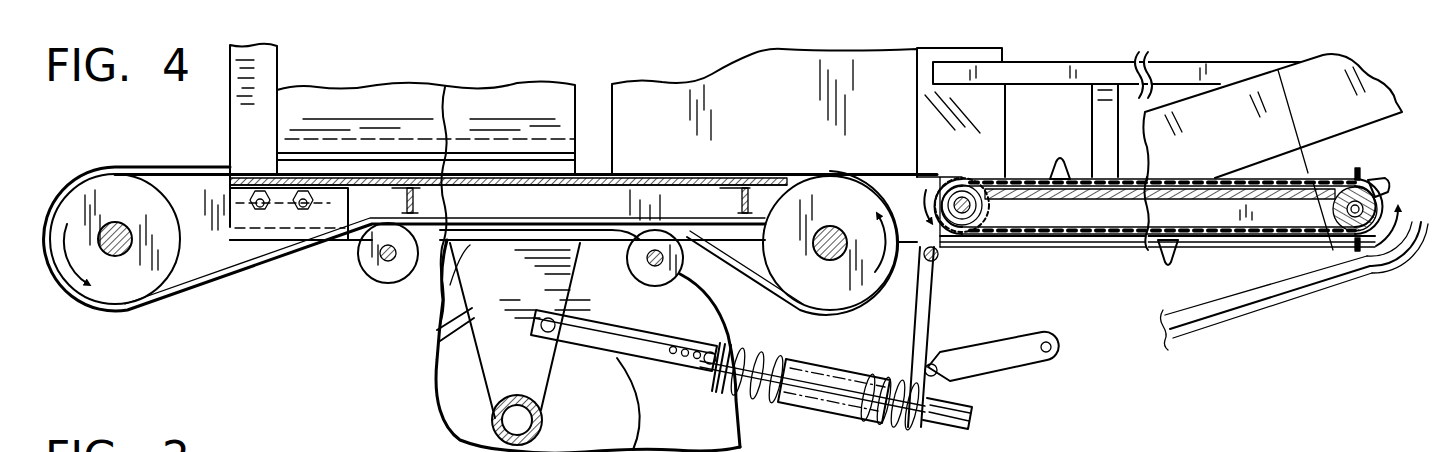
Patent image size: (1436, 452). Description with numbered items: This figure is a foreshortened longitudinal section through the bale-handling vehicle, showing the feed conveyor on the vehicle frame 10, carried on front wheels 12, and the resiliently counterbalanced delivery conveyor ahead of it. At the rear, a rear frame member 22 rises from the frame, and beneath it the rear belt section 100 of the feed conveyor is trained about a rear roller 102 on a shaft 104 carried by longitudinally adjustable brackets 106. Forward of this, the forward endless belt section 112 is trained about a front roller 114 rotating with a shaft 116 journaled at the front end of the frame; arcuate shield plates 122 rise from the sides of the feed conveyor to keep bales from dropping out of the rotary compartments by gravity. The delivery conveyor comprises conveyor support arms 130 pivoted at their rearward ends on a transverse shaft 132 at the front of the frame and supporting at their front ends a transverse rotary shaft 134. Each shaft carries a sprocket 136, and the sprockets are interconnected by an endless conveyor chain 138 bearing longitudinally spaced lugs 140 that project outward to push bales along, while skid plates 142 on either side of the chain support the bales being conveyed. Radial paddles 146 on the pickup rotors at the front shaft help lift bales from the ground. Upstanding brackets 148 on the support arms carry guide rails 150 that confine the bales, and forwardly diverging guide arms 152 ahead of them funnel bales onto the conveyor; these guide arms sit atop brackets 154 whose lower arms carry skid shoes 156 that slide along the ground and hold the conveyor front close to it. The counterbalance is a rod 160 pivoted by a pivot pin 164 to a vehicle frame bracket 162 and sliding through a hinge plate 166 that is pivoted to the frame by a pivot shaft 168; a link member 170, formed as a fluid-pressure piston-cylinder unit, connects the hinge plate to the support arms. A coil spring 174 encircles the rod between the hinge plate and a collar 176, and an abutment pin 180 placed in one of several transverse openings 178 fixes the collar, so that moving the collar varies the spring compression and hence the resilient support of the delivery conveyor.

The frame 10 is at (430, 248).
The front wheels 12 is at (723, 430).
The rear frame member 22 is at (243, 100).
The rear belt section 100 is at (213, 167).
The rear roller 102 is at (131, 282).
The shaft 104 is at (112, 232).
The longitudinally adjustable brackets 106 is at (192, 219).
The forward endless belt section 112 is at (794, 174).
The front roller 114 is at (845, 303).
The shaft 116 is at (823, 262).
The arcuate shield plates 122 is at (490, 105).
The conveyor support arms 130 is at (1112, 243).
The transverse shaft 132 is at (974, 218).
The transverse rotary shaft 134 is at (1362, 198).
The sprocket 136 is at (990, 212).
The endless conveyor chain 138 is at (1228, 238).
The lugs 140 is at (1057, 165).
The skid plates 142 is at (1095, 200).
The radial paddles 146 is at (1363, 183).
The upstanding brackets 148 is at (1100, 115).
The guide rails 150 is at (1040, 73).
The guide arms 152 is at (1350, 92).
The brackets 154 is at (1328, 268).
The skid shoes 156 is at (1220, 316).
The rod 160 is at (972, 415).
The vehicle frame bracket 162 is at (475, 275).
The pivot pin 164 is at (540, 320).
The hinge plate 166 is at (932, 305).
The pivot shaft 168 is at (938, 258).
The link member 170 is at (1040, 356).
The coil spring 174 is at (752, 393).
The collar 176 is at (726, 345).
The transverse openings 178 is at (697, 362).
The abutment pin 180 is at (708, 357).